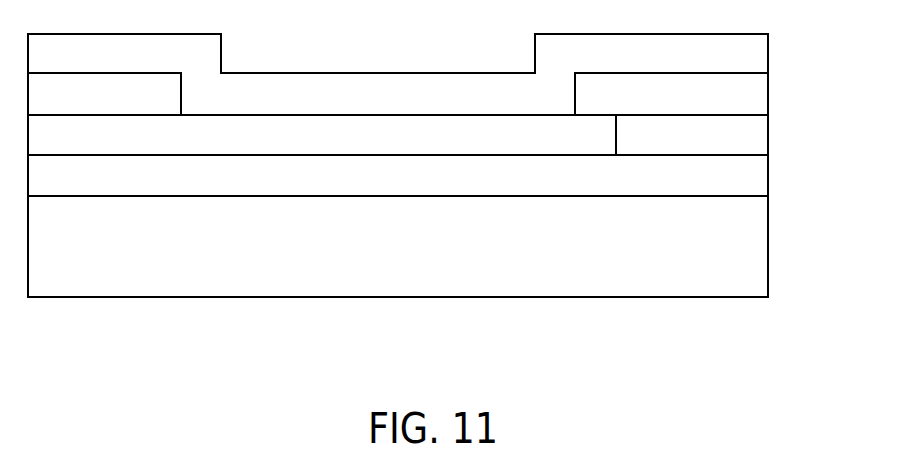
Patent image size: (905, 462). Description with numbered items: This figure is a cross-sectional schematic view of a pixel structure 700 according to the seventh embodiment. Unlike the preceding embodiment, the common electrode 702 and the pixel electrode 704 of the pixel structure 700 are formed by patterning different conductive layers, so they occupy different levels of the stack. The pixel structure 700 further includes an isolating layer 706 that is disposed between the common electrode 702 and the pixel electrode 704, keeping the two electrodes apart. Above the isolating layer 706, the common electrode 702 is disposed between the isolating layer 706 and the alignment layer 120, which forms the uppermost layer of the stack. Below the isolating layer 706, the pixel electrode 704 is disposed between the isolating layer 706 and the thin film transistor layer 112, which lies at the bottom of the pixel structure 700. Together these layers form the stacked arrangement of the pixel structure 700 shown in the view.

The pixel structure 700 is at (777, 34).
The alignment layer 120 is at (673, 66).
The isolating layer 706 is at (673, 106).
The pixel electrode 704 is at (673, 146).
The common electrode 702 is at (79, 107).
The thin film transistor layer 112 is at (673, 187).